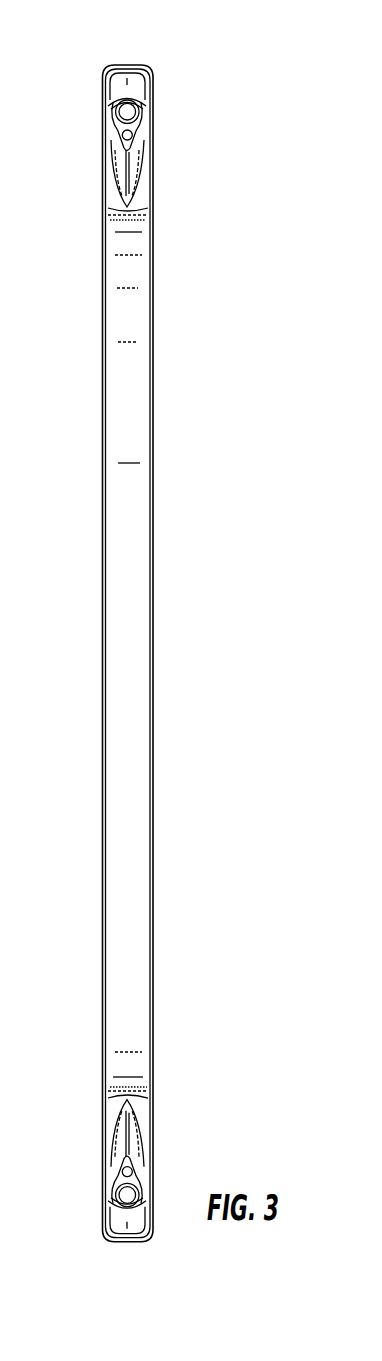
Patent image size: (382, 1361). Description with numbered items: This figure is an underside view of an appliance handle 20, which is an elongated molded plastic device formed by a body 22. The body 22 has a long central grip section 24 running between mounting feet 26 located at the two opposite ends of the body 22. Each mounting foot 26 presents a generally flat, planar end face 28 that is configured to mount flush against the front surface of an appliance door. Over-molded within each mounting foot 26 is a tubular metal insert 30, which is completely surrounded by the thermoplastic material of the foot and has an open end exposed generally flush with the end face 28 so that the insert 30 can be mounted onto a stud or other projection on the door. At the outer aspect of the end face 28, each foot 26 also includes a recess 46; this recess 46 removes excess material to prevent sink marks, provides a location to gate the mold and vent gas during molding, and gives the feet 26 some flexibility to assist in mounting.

The handle 20 is at (210, 84).
The body 22 is at (152, 541).
The central grip section 24 is at (117, 609).
The mounting foot 26 is at (146, 182).
The end face 28 is at (117, 128).
The tubular metal insert 30 is at (139, 115).
The recess 46 is at (121, 77).